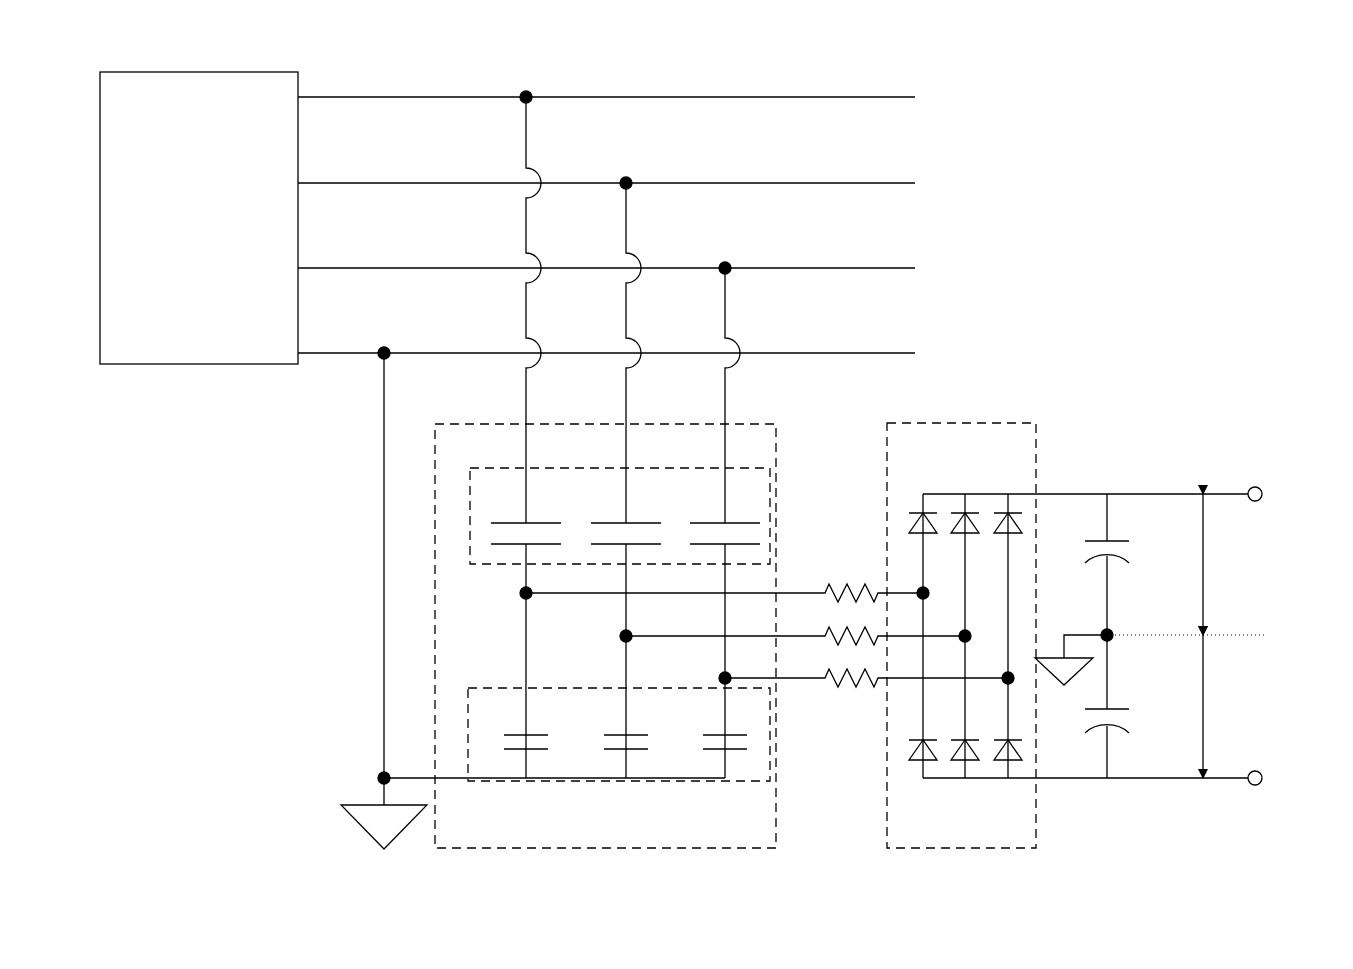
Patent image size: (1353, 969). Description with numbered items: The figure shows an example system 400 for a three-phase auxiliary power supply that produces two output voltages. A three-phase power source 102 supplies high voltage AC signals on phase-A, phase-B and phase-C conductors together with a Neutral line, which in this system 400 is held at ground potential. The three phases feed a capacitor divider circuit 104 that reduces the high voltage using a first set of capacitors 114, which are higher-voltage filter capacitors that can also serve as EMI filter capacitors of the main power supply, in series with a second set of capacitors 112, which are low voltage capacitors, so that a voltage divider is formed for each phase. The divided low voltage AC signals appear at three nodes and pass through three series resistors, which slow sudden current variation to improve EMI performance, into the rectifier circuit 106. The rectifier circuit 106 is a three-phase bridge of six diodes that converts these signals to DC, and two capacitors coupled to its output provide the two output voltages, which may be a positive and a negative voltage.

The system 400 is at (1238, 109).
The three-phase power source 102 is at (200, 364).
The capacitor divider circuit 104 is at (475, 851).
The rectifier circuit 106 is at (908, 849).
The second set of capacitors 112 is at (513, 688).
The first set of capacitors 114 is at (515, 467).